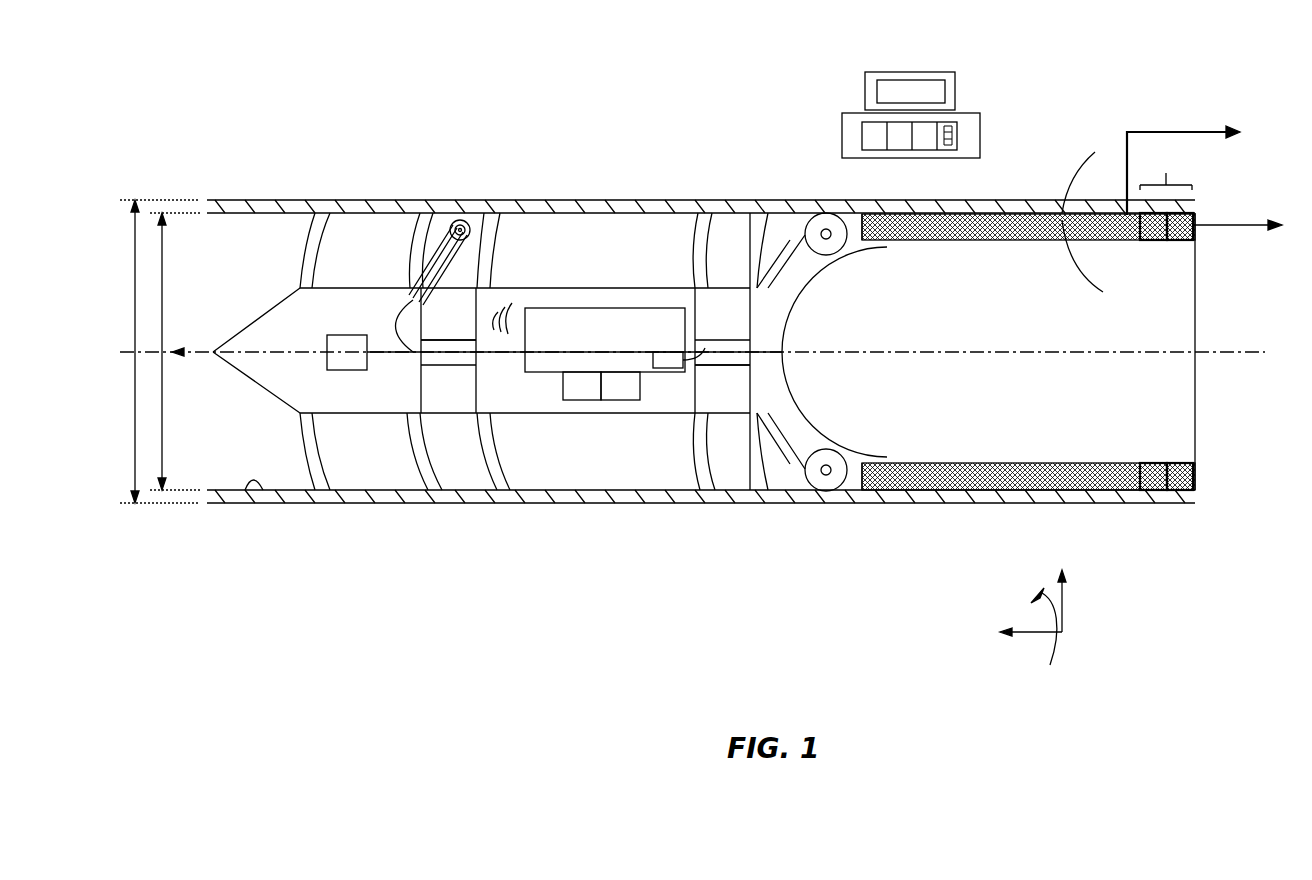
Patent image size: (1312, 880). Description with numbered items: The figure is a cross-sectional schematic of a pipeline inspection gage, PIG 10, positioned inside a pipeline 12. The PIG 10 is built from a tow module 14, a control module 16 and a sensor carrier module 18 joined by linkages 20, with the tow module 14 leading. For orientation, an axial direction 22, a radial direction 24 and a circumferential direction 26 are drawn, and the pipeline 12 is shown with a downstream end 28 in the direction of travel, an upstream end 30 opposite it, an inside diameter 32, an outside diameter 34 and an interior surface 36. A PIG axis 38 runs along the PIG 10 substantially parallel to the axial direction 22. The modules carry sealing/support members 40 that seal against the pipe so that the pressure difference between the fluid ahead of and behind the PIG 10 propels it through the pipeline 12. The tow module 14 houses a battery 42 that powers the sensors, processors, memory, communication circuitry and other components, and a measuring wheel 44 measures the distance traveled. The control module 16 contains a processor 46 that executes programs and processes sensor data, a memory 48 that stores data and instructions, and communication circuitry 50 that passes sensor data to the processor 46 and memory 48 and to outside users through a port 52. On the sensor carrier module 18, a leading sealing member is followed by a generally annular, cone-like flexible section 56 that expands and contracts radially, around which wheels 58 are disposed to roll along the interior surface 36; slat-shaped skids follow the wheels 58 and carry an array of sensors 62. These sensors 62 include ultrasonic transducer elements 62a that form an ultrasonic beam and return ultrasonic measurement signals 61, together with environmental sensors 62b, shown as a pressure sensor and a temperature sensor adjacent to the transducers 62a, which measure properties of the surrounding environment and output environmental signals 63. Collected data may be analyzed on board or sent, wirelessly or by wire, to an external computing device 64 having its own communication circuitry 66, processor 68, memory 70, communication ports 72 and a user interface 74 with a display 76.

The pipeline inspection gage (PIG) 10 is at (265, 255).
The pipeline 12 is at (262, 200).
The tow module 14 is at (355, 288).
The control module 16 is at (587, 288).
The sensor carrier module 18 is at (1197, 342).
The linkages 20 is at (455, 365).
The axial direction 22 is at (1040, 640).
The radial direction 24 is at (1068, 605).
The circumferential direction 26 is at (1042, 586).
The downstream end 28 is at (217, 282).
The upstream end 30 is at (1218, 331).
The inside diameter 32 is at (167, 377).
The outside diameter 34 is at (133, 448).
The interior surface 36 is at (263, 500).
The PIG axis 38 is at (1228, 352).
The sealing/support members 40 is at (300, 445).
The battery 42 is at (327, 348).
The measuring wheel 44 is at (487, 213).
The processor 46 is at (583, 400).
The memory 48 is at (622, 400).
The communication circuitry 50 is at (605, 308).
The port 52 is at (668, 368).
The flexible section 56 is at (797, 290).
The rotational guides (wheels) 58 is at (808, 215).
The ultrasonic measurement signals 61 is at (1172, 132).
The sensors 62 is at (958, 240).
The ultrasonic transducer elements 62a is at (1103, 222).
The environmental sensor 62b is at (1166, 318).
The environmental signals 63 is at (1235, 225).
The external computing device 64 is at (922, 128).
The communication circuitry 66 is at (872, 150).
The processor 68 is at (897, 150).
The memory 70 is at (920, 150).
The communication ports 72 is at (965, 130).
The user interface 74 is at (858, 93).
The display 76 is at (868, 85).